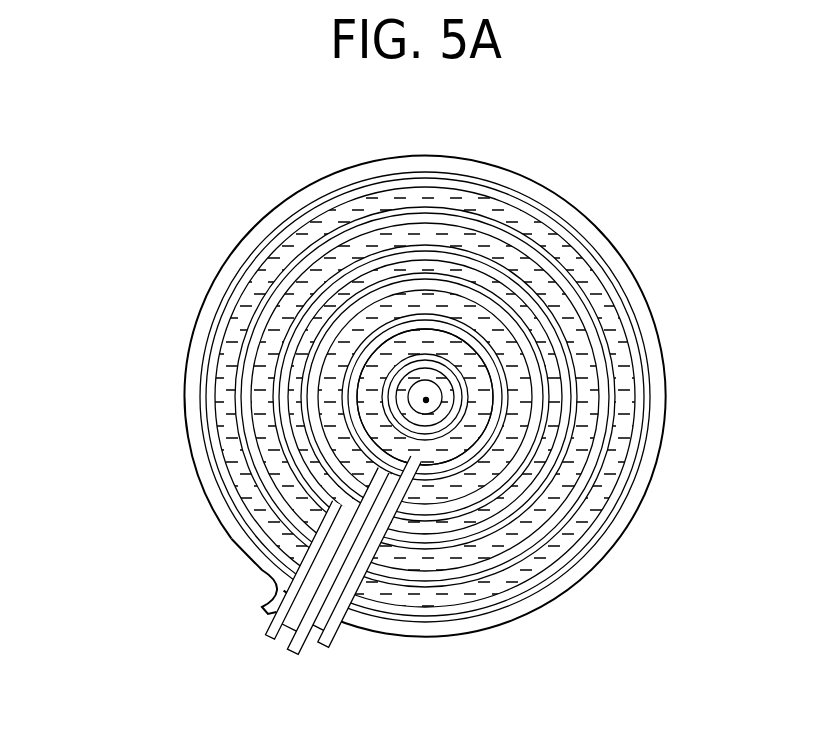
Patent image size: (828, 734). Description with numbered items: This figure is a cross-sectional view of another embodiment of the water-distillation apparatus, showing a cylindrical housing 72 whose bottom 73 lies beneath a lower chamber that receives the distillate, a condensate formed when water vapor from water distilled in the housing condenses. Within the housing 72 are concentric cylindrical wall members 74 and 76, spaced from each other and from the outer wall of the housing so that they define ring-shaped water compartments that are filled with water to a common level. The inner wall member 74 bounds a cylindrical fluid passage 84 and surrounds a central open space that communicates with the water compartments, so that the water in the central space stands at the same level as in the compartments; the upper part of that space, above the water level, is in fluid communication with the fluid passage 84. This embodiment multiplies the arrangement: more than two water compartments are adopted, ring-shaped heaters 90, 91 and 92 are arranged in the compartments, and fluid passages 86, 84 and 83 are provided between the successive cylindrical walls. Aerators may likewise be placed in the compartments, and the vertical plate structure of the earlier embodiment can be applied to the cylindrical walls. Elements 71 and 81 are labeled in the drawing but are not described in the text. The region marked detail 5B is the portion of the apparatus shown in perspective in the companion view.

The fluid channels 71 is at (469, 454).
The cylindrical housing 72 is at (659, 330).
The bottom 73 is at (398, 406).
The cylindrical wall member 74 is at (386, 278).
The cylindrical wall member 76 is at (557, 252).
The inner channel 81 is at (494, 405).
The fluid passage 83 is at (415, 409).
The cylindrical fluid passage 84 is at (332, 301).
The fluid passage 86 is at (602, 300).
The heater 90 is at (481, 238).
The heater 91 is at (547, 435).
The heater 92 is at (388, 381).
The detail 5B is at (266, 632).